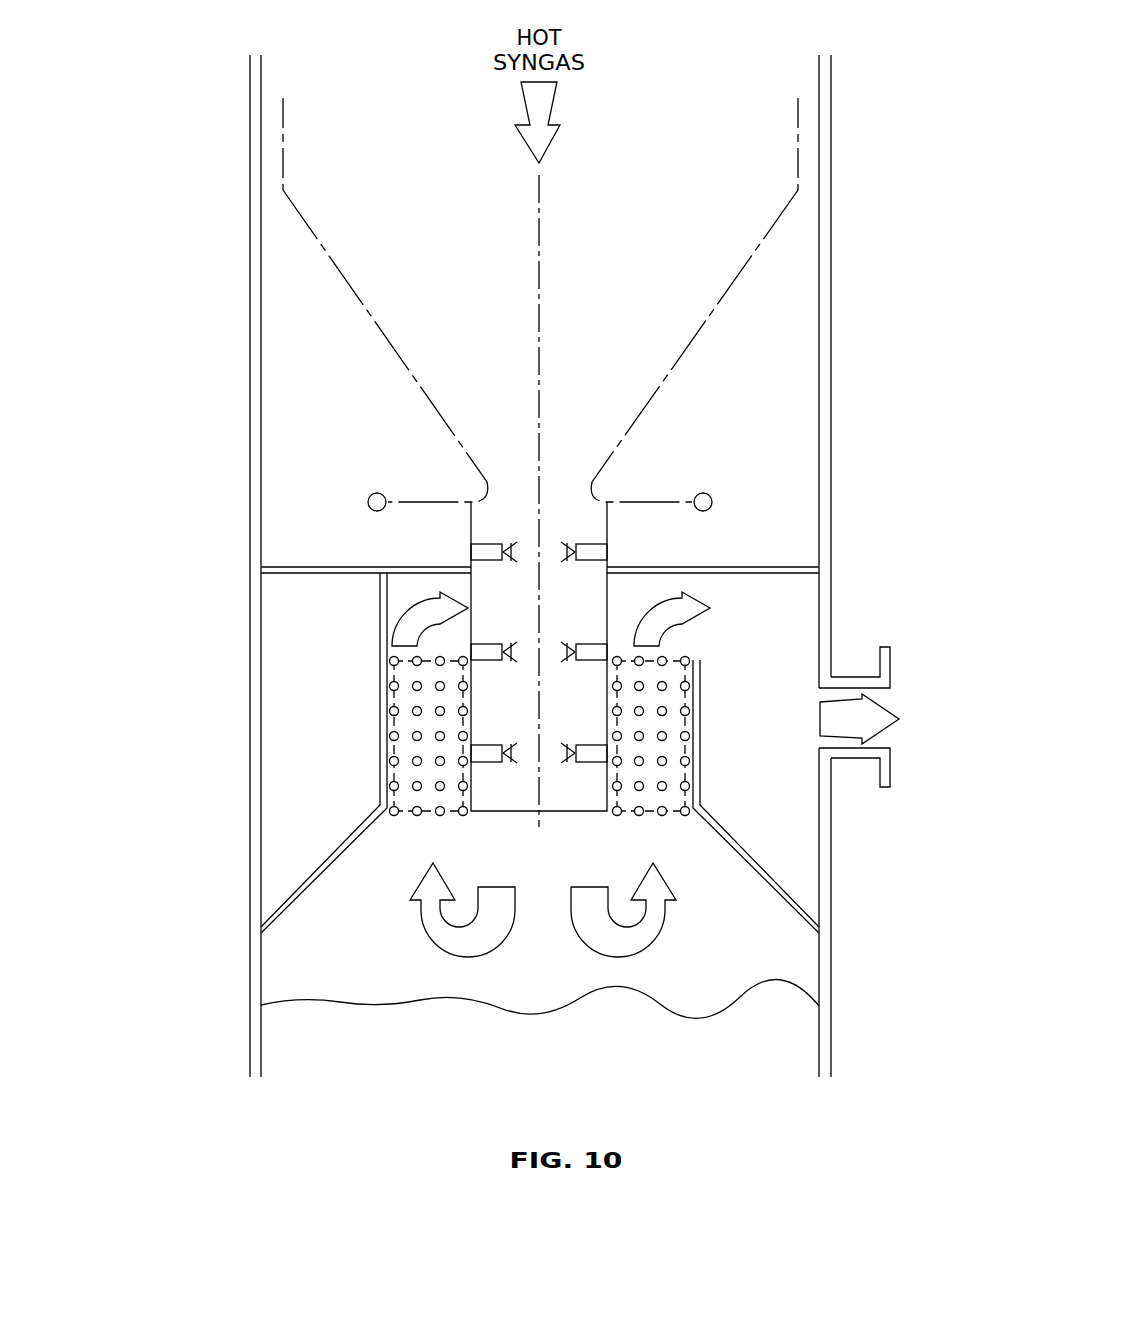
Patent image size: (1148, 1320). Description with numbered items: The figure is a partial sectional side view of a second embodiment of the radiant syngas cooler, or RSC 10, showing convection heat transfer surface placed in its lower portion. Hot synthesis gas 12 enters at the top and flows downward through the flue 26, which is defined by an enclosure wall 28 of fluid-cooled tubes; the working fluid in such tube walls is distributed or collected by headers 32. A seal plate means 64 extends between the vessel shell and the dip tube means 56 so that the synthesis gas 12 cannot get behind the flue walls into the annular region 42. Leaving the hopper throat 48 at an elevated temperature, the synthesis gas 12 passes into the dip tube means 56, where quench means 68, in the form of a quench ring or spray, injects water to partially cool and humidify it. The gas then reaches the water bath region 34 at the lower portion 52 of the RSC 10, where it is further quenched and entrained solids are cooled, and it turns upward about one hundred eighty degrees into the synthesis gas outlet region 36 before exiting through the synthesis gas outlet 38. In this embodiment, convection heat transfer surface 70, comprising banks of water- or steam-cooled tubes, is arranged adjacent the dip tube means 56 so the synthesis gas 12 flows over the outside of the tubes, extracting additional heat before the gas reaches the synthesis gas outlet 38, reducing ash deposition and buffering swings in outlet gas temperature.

The radiant syngas cooler 10 is at (850, 240).
The synthesis gas 12 is at (543, 901).
The flue 26 is at (483, 501).
The enclosure wall 28 is at (283, 155).
The header 32 is at (712, 496).
The water bath region 34 is at (540, 1023).
The synthesis gas outlet region 36 is at (540, 753).
The synthesis gas outlet 38 is at (813, 717).
The annular region 42 is at (798, 150).
The throat 48 is at (697, 332).
The lower portion 52 is at (220, 960).
The dip tube means 56 is at (509, 790).
The seal plate means 64 is at (358, 567).
The quench means 68 is at (508, 548).
The convection heat transfer surface 70 is at (392, 685).